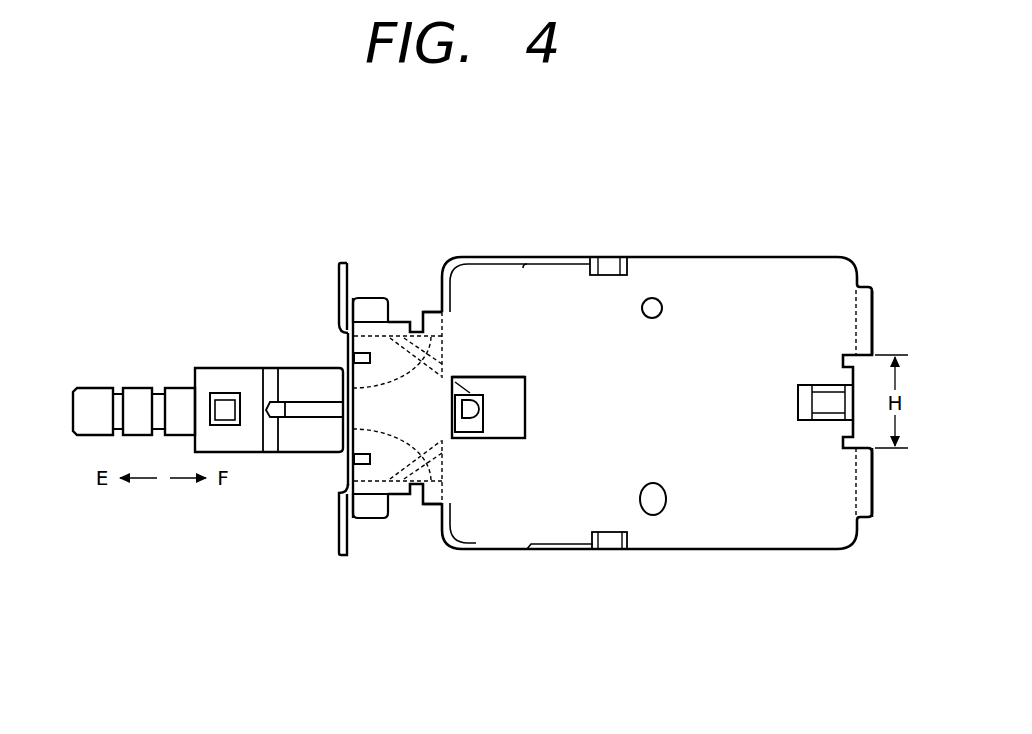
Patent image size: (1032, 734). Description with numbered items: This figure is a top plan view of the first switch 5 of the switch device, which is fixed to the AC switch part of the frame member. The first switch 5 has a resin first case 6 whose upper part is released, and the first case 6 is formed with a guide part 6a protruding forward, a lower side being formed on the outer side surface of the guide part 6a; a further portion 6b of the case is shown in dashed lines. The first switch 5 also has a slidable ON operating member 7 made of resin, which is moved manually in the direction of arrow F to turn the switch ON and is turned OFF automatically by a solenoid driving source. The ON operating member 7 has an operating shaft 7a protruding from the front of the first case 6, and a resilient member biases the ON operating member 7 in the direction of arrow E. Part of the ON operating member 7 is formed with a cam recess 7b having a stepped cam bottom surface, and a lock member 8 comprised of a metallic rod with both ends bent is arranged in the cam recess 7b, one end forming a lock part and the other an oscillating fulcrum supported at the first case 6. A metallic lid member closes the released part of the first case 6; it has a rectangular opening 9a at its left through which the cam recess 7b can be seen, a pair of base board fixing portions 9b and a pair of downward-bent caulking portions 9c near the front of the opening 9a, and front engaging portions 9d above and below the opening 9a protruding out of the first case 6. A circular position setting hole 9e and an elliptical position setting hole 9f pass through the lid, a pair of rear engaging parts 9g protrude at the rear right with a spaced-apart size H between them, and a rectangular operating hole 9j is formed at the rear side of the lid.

The first switch 5 is at (729, 236).
The first case 6 is at (448, 560).
The guide part 6a is at (378, 300).
The latch portion of fixing plate 6b is at (348, 387).
The ON operating member 7 is at (509, 421).
The operating shaft 7a is at (155, 388).
The cam recess 7b is at (472, 425).
The lock member 8 is at (463, 397).
The rectangular opening 9a is at (523, 403).
The base board fixing portions 9b is at (340, 292).
The caulking portions 9c is at (402, 323).
The front engaging portions 9d is at (432, 320).
The circular position setting hole 9e is at (652, 298).
The elliptical position setting hole 9f is at (653, 500).
The rear engaging parts 9g is at (862, 313).
The rectangular operating hole 9j is at (800, 402).